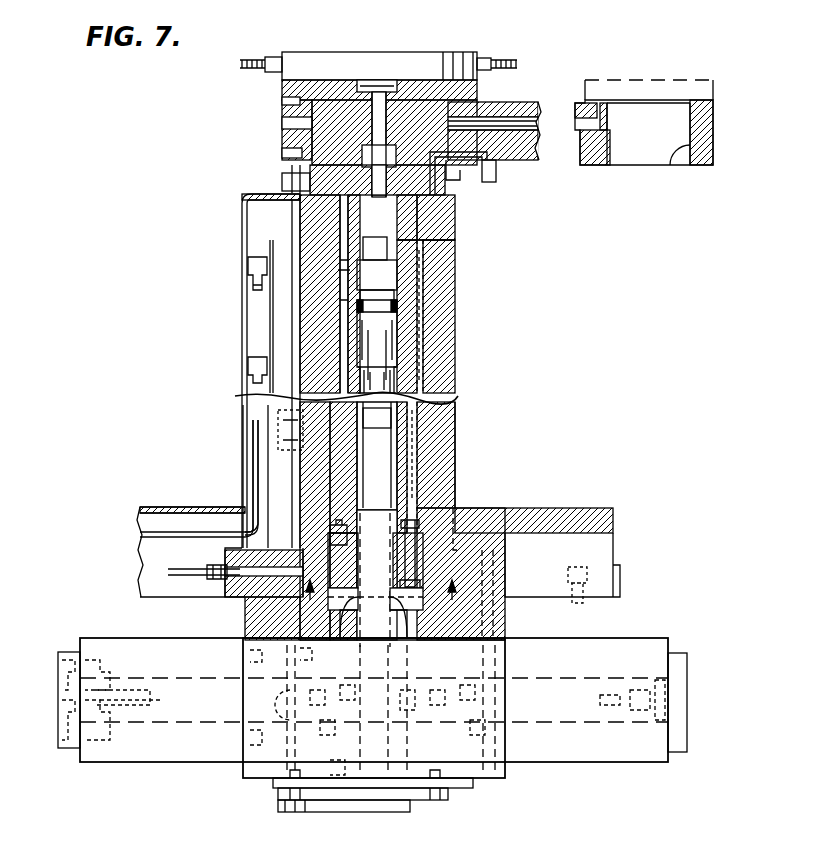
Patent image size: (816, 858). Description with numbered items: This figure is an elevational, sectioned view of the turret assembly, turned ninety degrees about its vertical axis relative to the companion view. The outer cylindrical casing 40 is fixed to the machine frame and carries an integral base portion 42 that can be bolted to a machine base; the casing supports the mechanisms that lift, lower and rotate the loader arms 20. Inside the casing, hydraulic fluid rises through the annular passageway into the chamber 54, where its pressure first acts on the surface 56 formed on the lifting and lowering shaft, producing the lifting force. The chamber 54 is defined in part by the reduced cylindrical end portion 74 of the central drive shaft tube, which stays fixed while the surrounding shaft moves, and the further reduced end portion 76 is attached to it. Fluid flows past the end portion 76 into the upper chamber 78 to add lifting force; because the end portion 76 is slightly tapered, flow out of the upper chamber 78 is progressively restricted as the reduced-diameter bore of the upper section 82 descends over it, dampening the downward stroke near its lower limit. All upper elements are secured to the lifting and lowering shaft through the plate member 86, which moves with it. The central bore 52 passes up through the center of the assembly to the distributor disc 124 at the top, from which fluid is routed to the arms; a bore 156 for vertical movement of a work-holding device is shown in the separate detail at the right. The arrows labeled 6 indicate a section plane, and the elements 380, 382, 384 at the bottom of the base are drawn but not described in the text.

The distributor disc 124 is at (387, 57).
The central bore 52 is at (382, 106).
The loader arms 20 is at (534, 182).
The bore 156 is at (688, 163).
The upper chamber 78 is at (365, 236).
The upper section 82 is at (395, 252).
The plate member 86 is at (400, 238).
The reduced end portion 76 is at (395, 255).
The surface 56 is at (397, 270).
The reduced cylindrical end portion 74 is at (380, 286).
The chamber 54 is at (397, 285).
The outer cylindrical casing 40 is at (455, 429).
The base portion 42 is at (507, 510).
The flow arrows 6 is at (380, 607).
The bottom fitting 382 is at (283, 800).
The bottom plate 380 is at (280, 786).
The bottom cap 384 is at (320, 808).